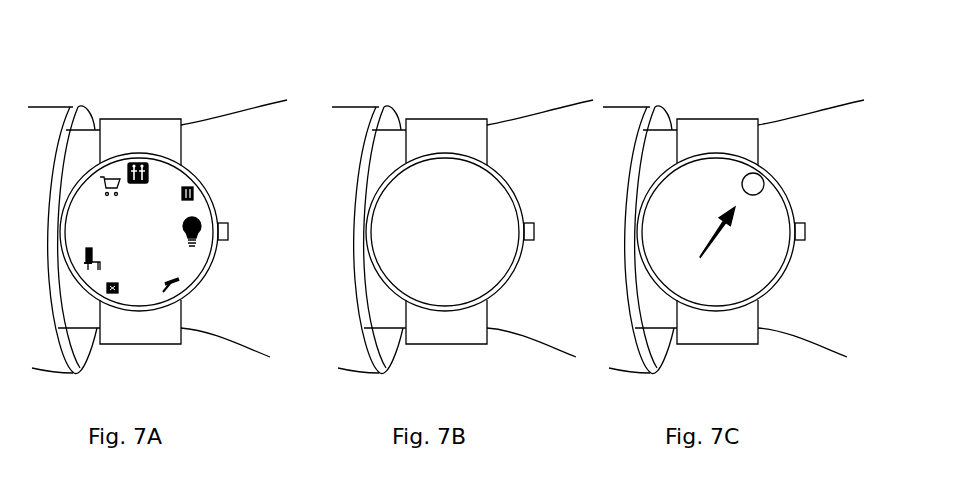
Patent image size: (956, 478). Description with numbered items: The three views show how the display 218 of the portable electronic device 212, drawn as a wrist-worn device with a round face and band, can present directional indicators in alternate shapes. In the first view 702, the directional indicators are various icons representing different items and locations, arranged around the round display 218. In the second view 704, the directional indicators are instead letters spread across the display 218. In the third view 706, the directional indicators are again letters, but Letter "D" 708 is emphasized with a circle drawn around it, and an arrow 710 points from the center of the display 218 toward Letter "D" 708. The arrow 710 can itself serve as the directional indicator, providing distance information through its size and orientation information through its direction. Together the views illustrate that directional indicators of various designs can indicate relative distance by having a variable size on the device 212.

In FIG. 7A, the wearable device display showing icon menu 702 is at (140, 108).
In FIG. 7B, the wearable device display showing lettered menu 704 is at (445, 167).
In FIG. 7C, the wearable device display showing selection 706 is at (716, 167).
In FIG. 7A, the portable electronic device 212 is at (108, 316).
In FIG. 7B, the portable electronic device 212 is at (405, 240).
In FIG. 7C, the portable electronic device 212 is at (676, 240).
In FIG. 7A, the display 218 is at (195, 282).
In FIG. 7B, the display 218 is at (467, 247).
In FIG. 7C, the display 218 is at (738, 247).
In FIG. 7C, the Letter D 708 is at (801, 176).
In FIG. 7C, the arrow 710 is at (769, 225).